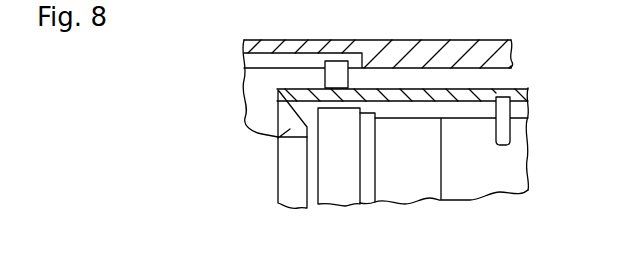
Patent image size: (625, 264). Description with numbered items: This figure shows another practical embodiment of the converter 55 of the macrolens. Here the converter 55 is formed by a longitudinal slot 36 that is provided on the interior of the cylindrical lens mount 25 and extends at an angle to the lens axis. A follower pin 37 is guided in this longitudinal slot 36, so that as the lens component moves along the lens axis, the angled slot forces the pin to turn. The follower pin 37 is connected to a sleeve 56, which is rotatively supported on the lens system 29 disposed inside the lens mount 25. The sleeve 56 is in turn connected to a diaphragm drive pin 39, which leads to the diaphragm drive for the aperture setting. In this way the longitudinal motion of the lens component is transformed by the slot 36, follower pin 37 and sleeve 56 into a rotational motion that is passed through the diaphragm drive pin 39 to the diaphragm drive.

The cylindrical lens mounting 25 is at (437, 50).
The longitudinal slot 36 is at (267, 60).
The follower pin 37 is at (337, 68).
The diaphragm drive pin 39 is at (508, 128).
The lens system 29 is at (420, 170).
The converter 55 is at (272, 83).
The sleeve 56 is at (467, 90).